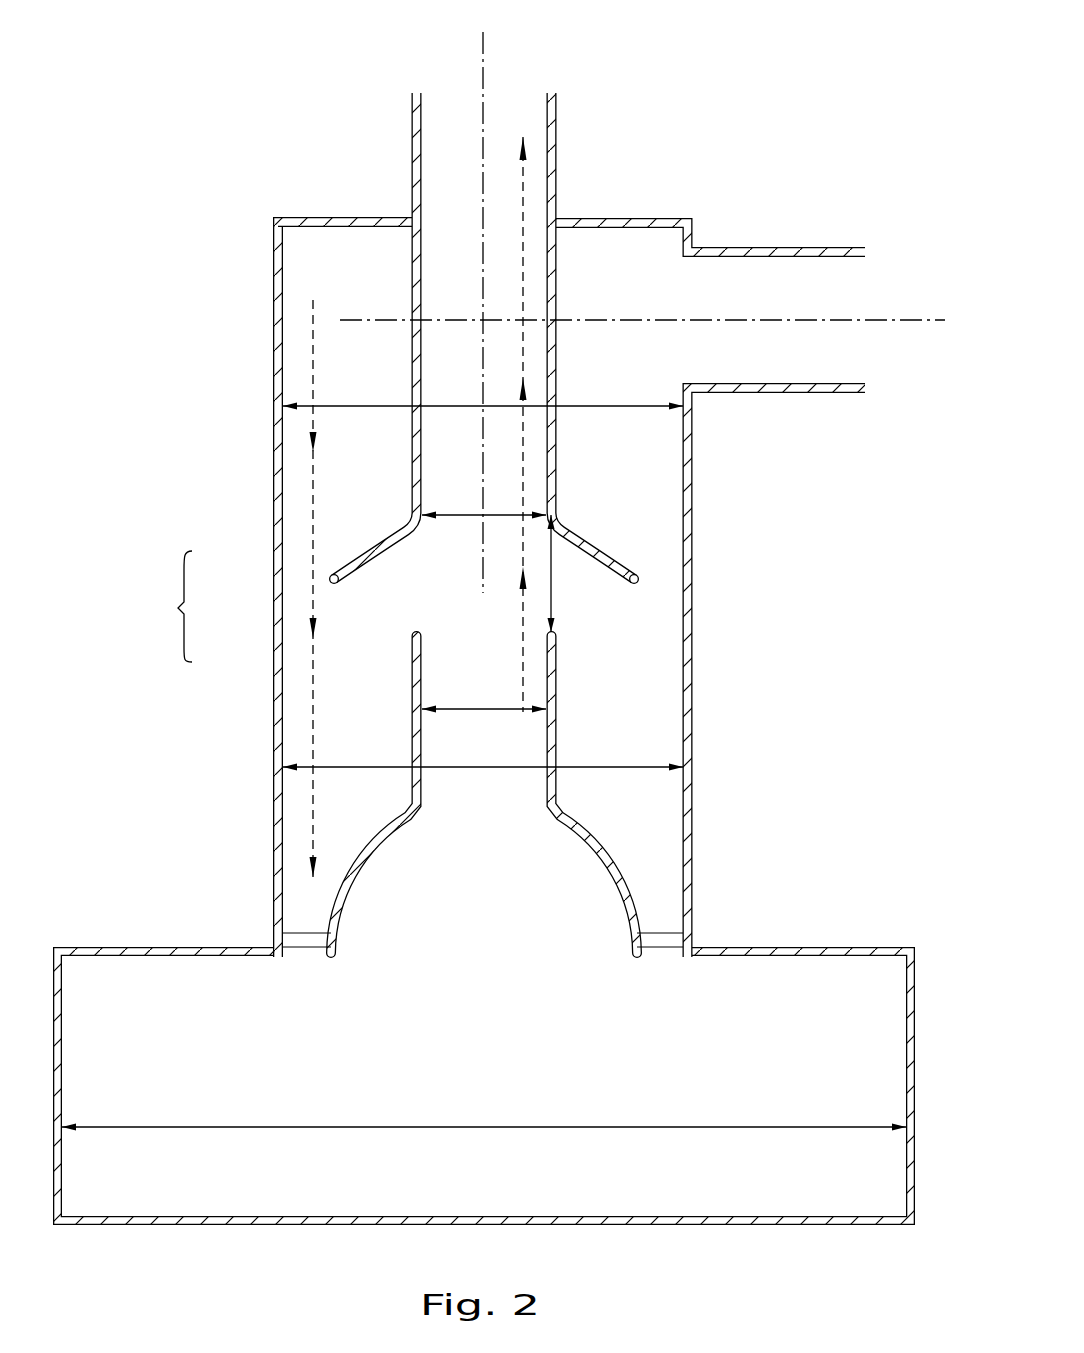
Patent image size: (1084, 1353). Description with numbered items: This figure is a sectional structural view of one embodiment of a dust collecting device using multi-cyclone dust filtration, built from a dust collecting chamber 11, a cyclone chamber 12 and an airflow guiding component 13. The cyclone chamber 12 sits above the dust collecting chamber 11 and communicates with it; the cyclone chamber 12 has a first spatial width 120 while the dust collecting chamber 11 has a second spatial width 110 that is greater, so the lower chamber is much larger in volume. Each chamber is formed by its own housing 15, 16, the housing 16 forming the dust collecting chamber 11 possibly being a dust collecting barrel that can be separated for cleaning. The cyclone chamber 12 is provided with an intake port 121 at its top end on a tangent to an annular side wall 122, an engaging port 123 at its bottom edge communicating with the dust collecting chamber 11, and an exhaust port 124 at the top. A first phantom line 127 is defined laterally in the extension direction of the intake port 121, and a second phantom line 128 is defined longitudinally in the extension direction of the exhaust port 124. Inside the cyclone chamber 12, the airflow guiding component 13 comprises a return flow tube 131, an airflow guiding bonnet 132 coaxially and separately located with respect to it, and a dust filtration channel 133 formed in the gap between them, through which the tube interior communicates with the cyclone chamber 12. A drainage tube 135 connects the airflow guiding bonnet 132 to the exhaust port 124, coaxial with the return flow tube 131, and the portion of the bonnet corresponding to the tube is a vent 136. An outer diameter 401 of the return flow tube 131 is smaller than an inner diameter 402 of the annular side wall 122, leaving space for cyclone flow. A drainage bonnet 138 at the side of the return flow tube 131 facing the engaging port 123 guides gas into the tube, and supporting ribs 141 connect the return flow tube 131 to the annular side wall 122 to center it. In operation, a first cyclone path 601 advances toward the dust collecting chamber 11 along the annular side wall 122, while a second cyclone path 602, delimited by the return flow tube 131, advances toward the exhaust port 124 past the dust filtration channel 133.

The dust collecting chamber 11 is at (242, 1212).
The second spatial width 110 is at (484, 1111).
The cyclone chamber 12 is at (340, 245).
The first spatial width 120 is at (358, 402).
The intake port 121 is at (816, 246).
The annular side wall 122 is at (692, 712).
The engaging port 123 is at (683, 957).
The exhaust port 124 is at (557, 155).
The first phantom line 127 is at (746, 318).
The second phantom line 128 is at (483, 52).
The airflow guiding component 13 is at (170, 606).
The return flow tube 131 is at (410, 668).
The airflow guiding bonnet 132 is at (348, 556).
The dust filtration channel 133 is at (553, 580).
The drainage tube 135 is at (557, 470).
The vent 136 is at (457, 513).
The drainage bonnet 138 is at (330, 910).
The supporting ribs 141 is at (665, 930).
The housing 15 is at (273, 258).
The housing 16 is at (865, 946).
The outer diameter 401 is at (484, 696).
The inner diameter 402 is at (483, 753).
The first cyclone path 601 is at (318, 722).
The second cyclone path 602 is at (523, 273).